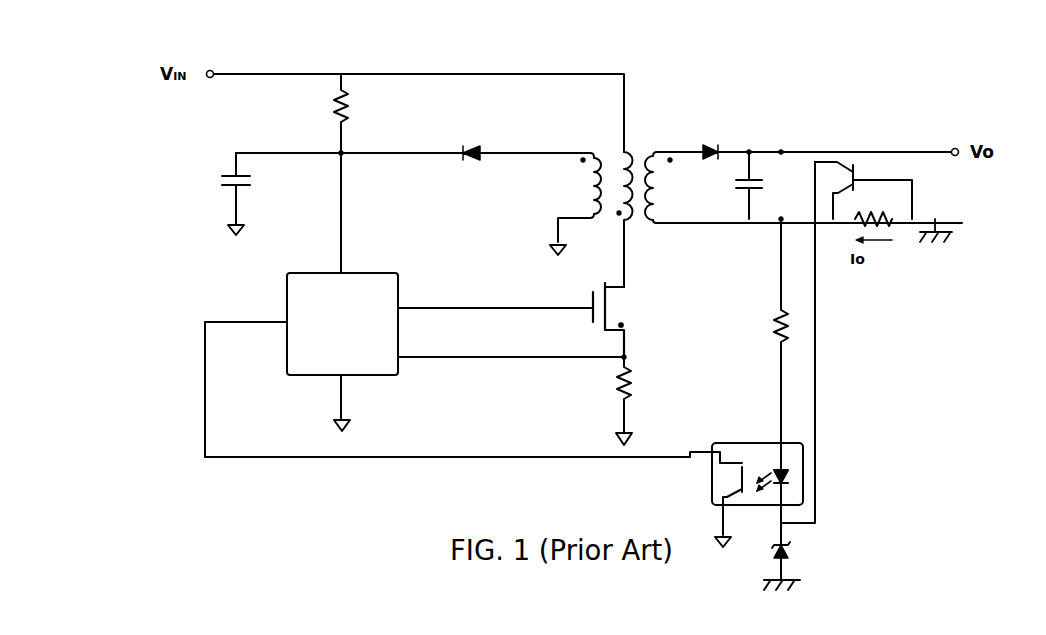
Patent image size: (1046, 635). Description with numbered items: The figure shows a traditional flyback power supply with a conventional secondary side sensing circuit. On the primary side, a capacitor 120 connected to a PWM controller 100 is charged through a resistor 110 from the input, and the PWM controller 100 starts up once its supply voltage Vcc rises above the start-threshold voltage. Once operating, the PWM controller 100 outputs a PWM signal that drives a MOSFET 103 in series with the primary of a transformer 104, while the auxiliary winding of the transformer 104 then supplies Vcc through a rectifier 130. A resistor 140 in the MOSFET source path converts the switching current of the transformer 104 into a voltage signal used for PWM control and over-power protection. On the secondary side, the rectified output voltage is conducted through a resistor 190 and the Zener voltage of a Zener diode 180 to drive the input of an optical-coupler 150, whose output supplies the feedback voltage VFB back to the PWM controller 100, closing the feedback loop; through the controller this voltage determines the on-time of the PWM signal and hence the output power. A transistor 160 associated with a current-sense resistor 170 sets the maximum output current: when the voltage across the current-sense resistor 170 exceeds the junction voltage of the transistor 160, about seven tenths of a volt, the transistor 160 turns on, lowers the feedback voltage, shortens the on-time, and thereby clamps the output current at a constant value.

The PWM controller 100 is at (376, 272).
The MOSFET 103 is at (629, 310).
The transformer 104 is at (644, 138).
The resistor 110 is at (352, 108).
The capacitor 120 is at (214, 179).
The rectifier 130 is at (468, 146).
The resistor 140 is at (640, 383).
The optical-coupler 150 is at (803, 478).
The transistor 160 is at (840, 151).
The current-sense resistor 170 is at (882, 237).
The Zener diode 180 is at (804, 556).
The resistor 190 is at (774, 331).